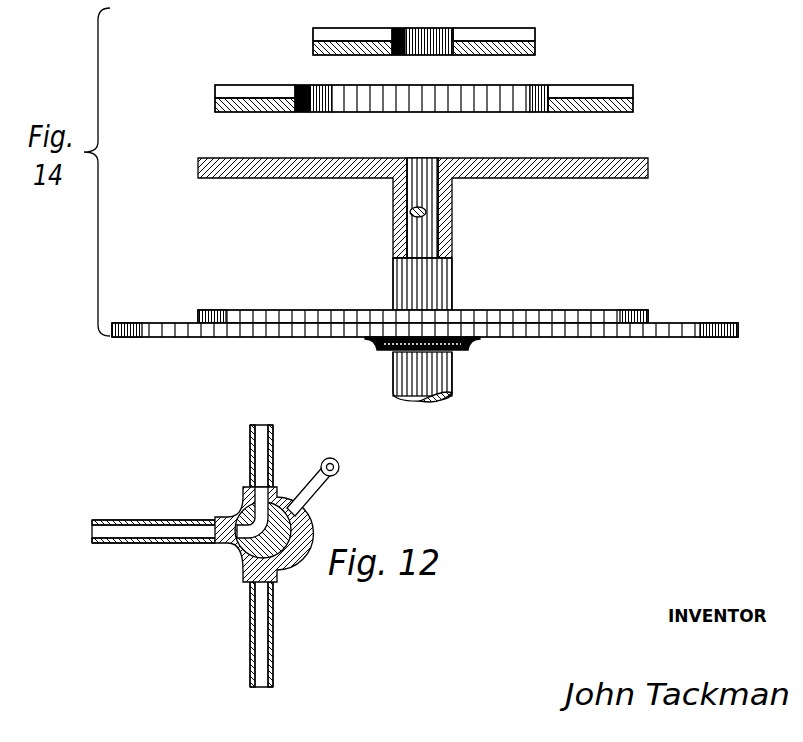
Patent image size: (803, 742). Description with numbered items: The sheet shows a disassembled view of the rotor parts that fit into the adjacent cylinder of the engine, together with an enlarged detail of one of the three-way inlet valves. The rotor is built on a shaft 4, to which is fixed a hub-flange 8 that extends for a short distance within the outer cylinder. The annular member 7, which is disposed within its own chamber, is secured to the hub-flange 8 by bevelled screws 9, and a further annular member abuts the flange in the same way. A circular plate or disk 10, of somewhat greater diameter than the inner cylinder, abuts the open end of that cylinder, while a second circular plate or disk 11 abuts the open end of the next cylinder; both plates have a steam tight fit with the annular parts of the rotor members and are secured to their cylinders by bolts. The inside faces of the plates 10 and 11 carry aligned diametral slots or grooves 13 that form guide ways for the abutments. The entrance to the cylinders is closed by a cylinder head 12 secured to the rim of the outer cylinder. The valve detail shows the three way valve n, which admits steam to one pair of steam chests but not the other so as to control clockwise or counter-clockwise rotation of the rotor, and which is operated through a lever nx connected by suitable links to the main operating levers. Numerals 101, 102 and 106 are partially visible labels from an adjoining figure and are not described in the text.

In FIG. 14, the shaft 4 is at (445, 292).
In FIG. 14, the annular member 7 is at (251, 4).
In FIG. 14, the hub-flange 8 is at (628, 178).
In FIG. 14, the bevelled screws 9 is at (375, 4).
In FIG. 14, the circular plate or disk 10 is at (540, 49).
In FIG. 14, the circular plate or disk 11 is at (618, 110).
In FIG. 14, the cylinder head 12 is at (560, 333).
In FIG. 14, the diametral slots or grooves 13 is at (225, 88).
In FIG. 14, the component (cut off) 101 is at (592, 0).
In FIG. 14, the component (cut off) 102 is at (652, 0).
In FIG. 14, the component (cut off) 106 is at (497, 0).
In FIG. 12, the three way valve n is at (299, 537).
In FIG. 12, the lever nx is at (326, 477).